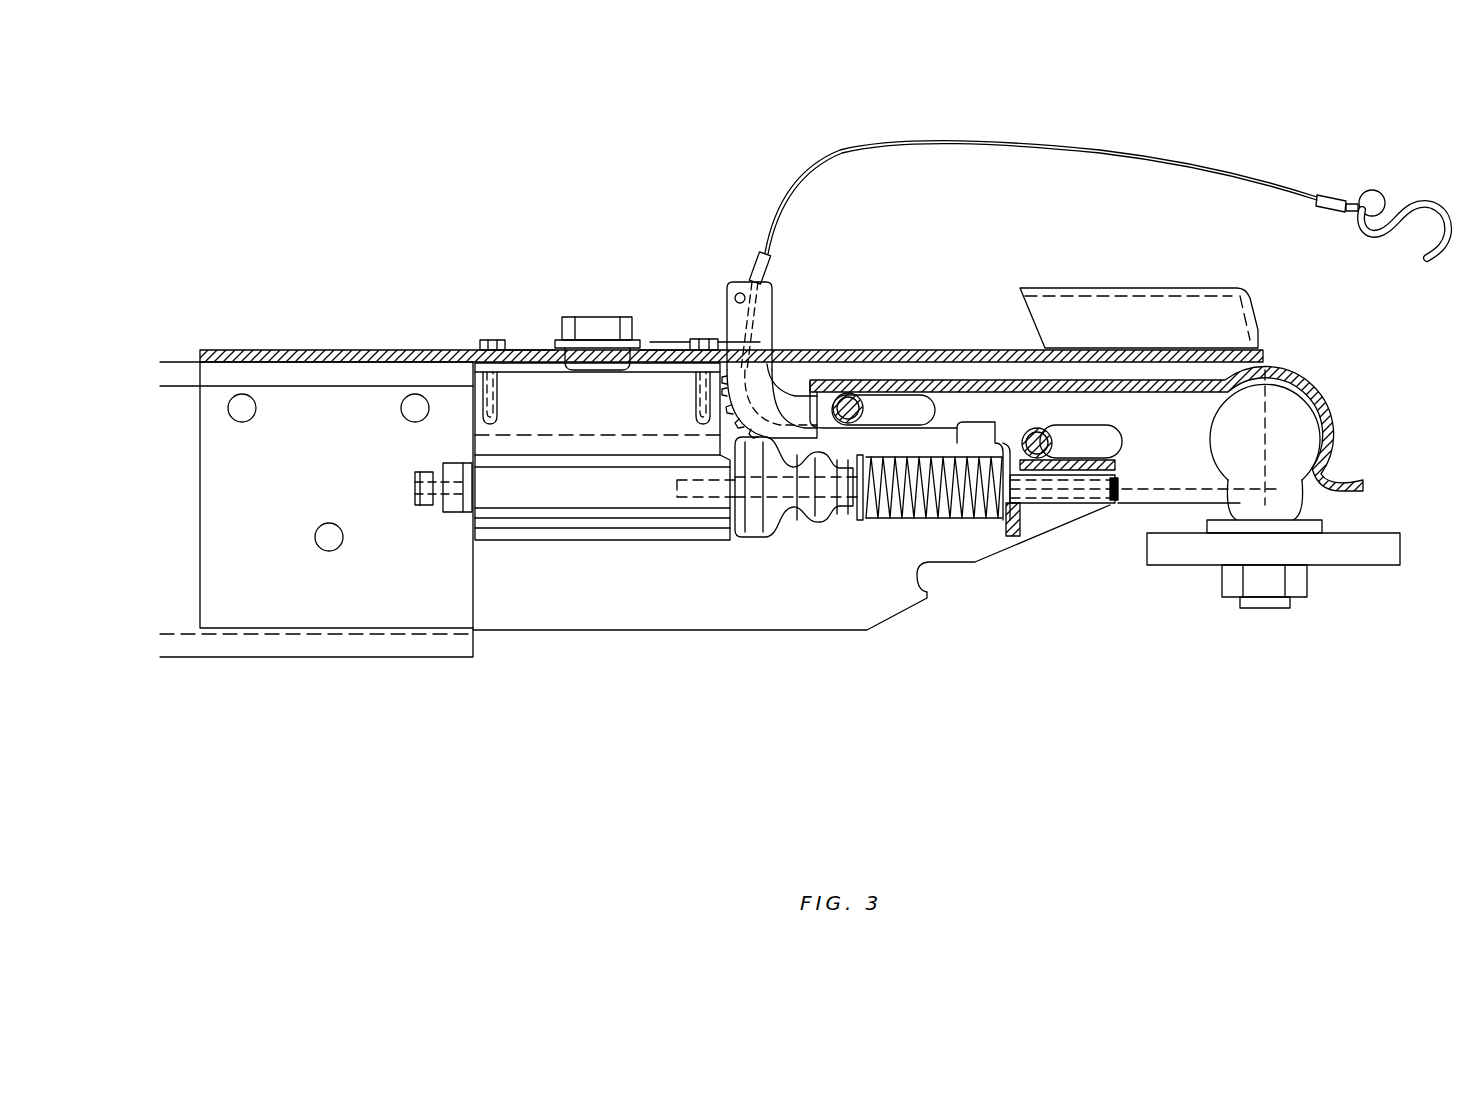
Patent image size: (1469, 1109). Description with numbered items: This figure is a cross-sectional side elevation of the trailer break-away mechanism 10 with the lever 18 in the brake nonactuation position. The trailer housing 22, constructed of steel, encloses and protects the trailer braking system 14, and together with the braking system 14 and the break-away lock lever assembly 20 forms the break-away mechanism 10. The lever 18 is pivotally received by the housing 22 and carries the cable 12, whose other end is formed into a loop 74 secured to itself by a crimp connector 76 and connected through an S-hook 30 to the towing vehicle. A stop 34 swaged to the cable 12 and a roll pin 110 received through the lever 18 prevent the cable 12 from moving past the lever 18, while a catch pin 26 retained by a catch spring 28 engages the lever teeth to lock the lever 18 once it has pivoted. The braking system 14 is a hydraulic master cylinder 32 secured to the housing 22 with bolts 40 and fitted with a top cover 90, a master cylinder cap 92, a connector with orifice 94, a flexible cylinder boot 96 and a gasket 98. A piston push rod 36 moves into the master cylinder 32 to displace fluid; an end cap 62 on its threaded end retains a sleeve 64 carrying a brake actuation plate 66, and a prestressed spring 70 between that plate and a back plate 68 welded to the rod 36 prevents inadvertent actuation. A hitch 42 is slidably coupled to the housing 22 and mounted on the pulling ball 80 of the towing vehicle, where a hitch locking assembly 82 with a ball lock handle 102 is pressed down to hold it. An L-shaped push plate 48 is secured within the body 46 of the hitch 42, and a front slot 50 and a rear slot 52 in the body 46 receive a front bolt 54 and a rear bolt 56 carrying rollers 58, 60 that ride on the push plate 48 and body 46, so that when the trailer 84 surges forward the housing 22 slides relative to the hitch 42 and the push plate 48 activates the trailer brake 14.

The trailer break-away mechanism 10 is at (1087, 173).
The cable 12 is at (1028, 150).
The trailer braking system 14 is at (876, 566).
The lever 18 is at (731, 303).
The break-away lock lever assembly 20 is at (765, 318).
The trailer housing 22 is at (848, 352).
The catch pin 26 is at (727, 340).
The catch spring 28 is at (688, 342).
The S-hook 30 is at (1412, 207).
The master cylinder 32 is at (532, 526).
The stop 34 is at (757, 262).
The piston push rod 36 is at (850, 515).
The bolts 40 is at (492, 340).
The hitch 42 is at (1105, 462).
The body 46 is at (1305, 400).
The L-shaped push plate 48 is at (1015, 520).
The front slot 50 is at (1070, 428).
The rear slot 52 is at (935, 405).
The front bolt 54 is at (1025, 432).
The rear bolt 56 is at (843, 393).
The roller 58 is at (1038, 428).
The roller 60 is at (855, 393).
The end cap 62 is at (1100, 498).
The sleeve 64 is at (1040, 500).
The brake actuation plate 66 is at (1005, 535).
The back plate 68 is at (858, 520).
The prestressed spring 70 is at (912, 520).
The loop 74 is at (1372, 190).
The crimp connector 76 is at (1343, 196).
The pulling ball 80 is at (1290, 455).
The hitch locking assembly 82 is at (1141, 292).
The trailer 84 is at (442, 690).
The top cover 90 is at (527, 360).
The master cylinder cap 92 is at (598, 322).
The connector with orifice 94 is at (330, 690).
The flexible cylinder boot 96 is at (758, 530).
The gasket 98 is at (540, 375).
The ball lock handle 102 is at (1195, 302).
The roll pin 110 is at (740, 292).